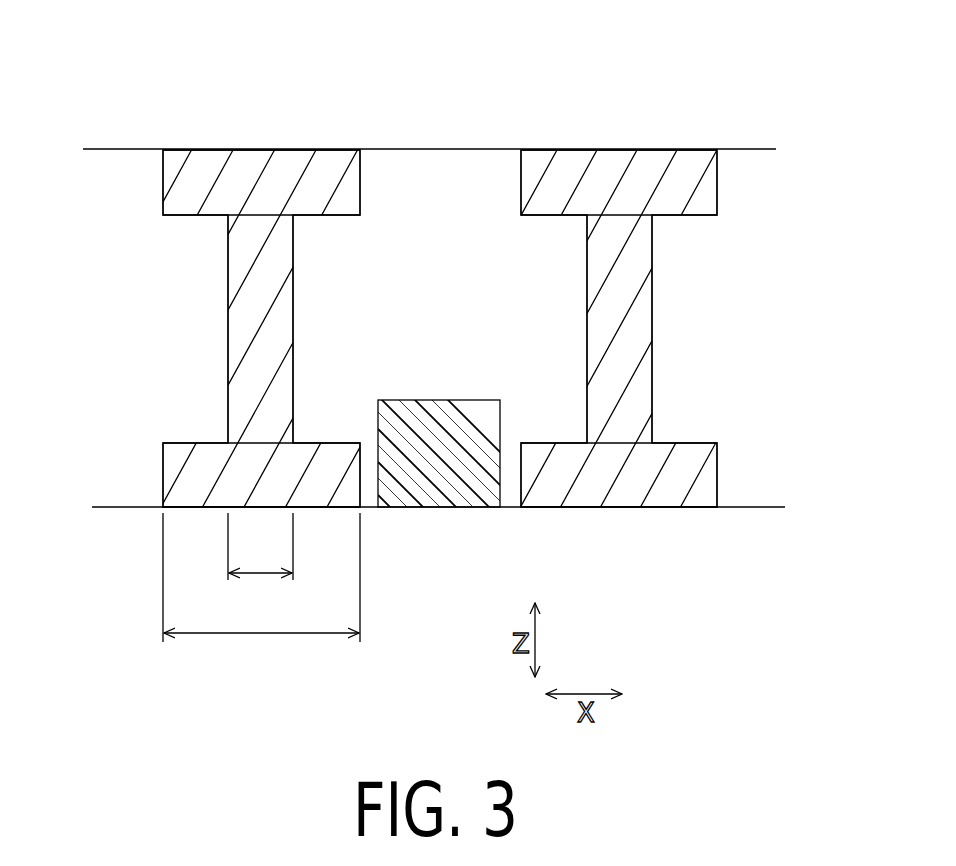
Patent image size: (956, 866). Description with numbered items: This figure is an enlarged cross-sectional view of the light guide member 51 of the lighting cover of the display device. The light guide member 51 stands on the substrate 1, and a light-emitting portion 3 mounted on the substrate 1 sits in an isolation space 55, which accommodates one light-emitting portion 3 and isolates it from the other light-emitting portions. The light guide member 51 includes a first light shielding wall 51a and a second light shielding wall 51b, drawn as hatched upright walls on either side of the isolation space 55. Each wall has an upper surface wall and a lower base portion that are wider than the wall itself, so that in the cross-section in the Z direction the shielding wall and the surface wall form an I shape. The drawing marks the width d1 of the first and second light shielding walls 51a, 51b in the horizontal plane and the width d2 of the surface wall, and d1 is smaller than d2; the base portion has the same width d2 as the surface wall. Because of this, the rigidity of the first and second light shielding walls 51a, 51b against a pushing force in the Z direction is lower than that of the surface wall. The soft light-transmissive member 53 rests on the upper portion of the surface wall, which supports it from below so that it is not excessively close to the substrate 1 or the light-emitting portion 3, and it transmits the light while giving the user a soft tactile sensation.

The substrate 1 is at (463, 556).
The light-emitting portion 3 is at (443, 398).
The light guide member 51 is at (727, 165).
The first light shielding wall 51a is at (235, 330).
The second light shielding wall 51b is at (637, 326).
The soft light-transmissive member 53 is at (466, 132).
The isolation space 55 is at (466, 293).
The width of the first and second light shielding walls d1 is at (260, 563).
The width of the surface wall d2 is at (261, 592).